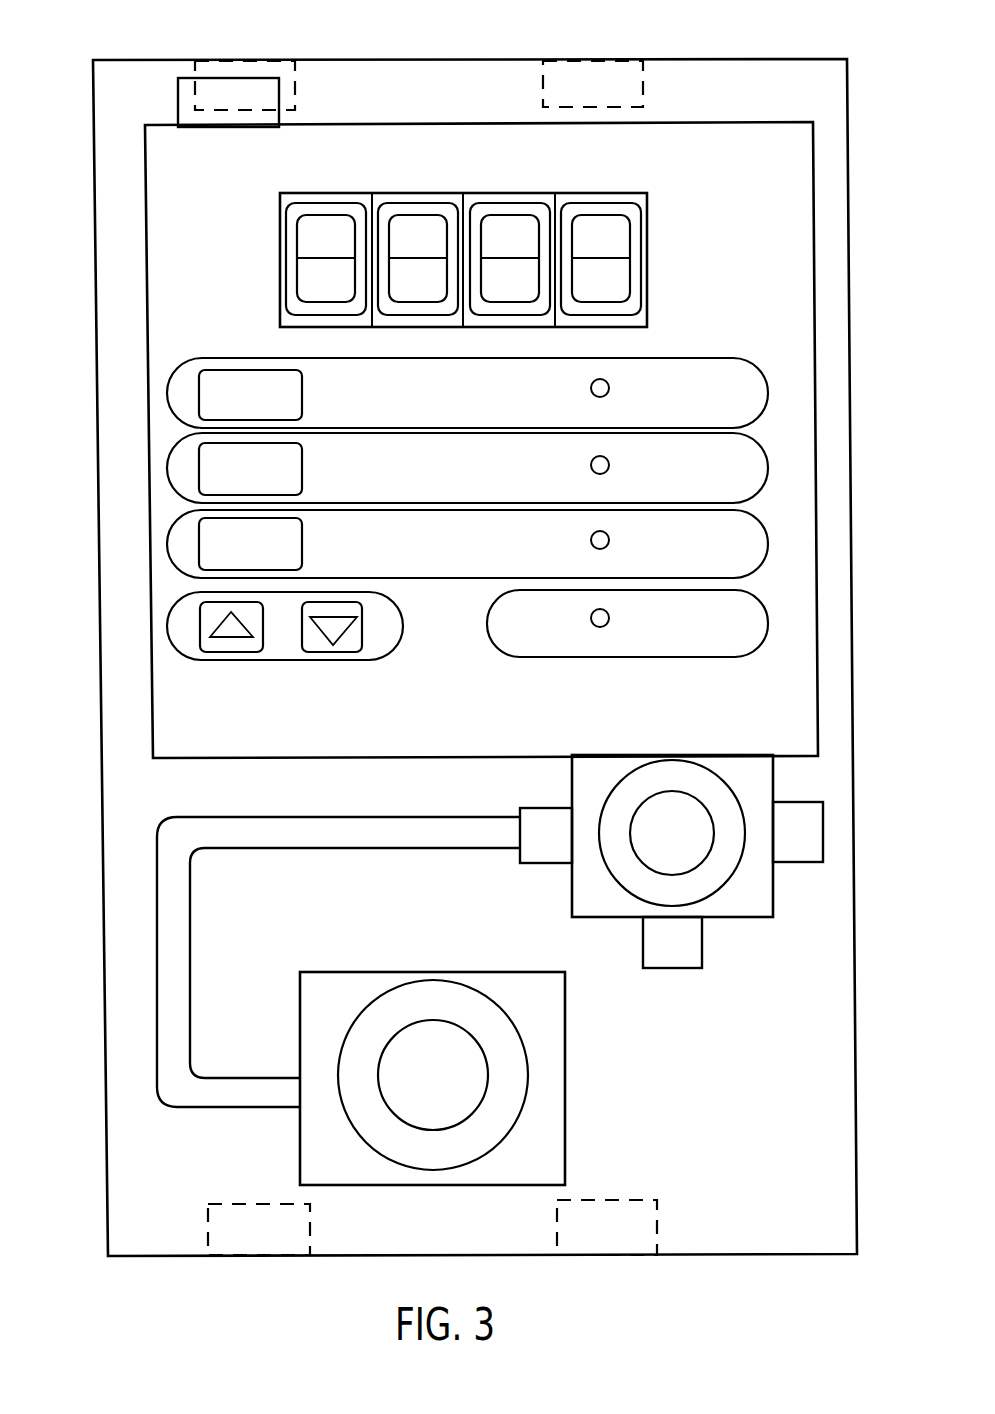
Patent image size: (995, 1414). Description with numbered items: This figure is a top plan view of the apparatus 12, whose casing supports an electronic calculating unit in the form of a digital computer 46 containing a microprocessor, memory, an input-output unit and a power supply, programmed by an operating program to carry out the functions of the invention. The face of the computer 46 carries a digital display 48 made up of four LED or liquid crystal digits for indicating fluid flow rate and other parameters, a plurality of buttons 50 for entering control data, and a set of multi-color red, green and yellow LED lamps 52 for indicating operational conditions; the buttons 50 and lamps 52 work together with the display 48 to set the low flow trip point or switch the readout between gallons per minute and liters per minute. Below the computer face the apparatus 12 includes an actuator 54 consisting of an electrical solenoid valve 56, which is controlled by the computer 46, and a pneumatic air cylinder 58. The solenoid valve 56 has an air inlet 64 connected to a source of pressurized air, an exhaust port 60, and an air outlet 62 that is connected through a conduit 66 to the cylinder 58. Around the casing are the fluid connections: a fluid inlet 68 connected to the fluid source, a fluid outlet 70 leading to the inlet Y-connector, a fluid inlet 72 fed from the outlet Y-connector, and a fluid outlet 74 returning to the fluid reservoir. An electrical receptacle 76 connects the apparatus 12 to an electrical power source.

The apparatus 12 is at (492, 53).
The digital computer 46 is at (850, 258).
The digital display 48 is at (637, 242).
The buttons 50 is at (186, 625).
The lamps 52 is at (606, 379).
The actuator 54 is at (814, 1005).
The electrical solenoid valve 56 is at (767, 890).
The pneumatic air cylinder 58 is at (572, 1091).
The exhaust port 60 is at (788, 806).
The air outlet 62 is at (545, 808).
The air inlet 64 is at (675, 970).
The conduit 66 is at (157, 943).
The fluid inlet 68 is at (260, 1203).
The fluid outlet 70 is at (230, 70).
The fluid inlet 72 is at (600, 66).
The fluid outlet 74 is at (640, 1200).
The electrical receptacle 76 is at (178, 97).